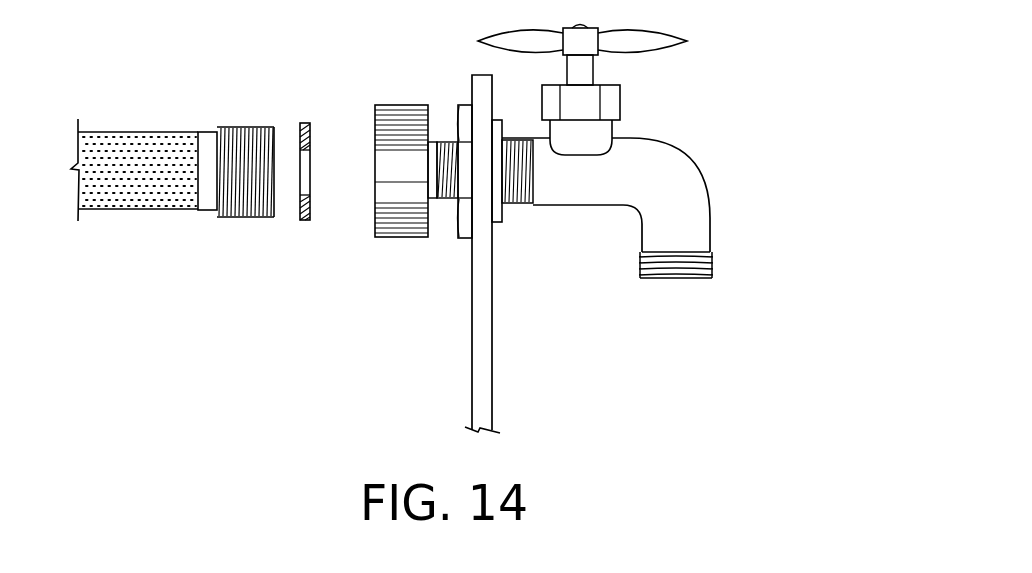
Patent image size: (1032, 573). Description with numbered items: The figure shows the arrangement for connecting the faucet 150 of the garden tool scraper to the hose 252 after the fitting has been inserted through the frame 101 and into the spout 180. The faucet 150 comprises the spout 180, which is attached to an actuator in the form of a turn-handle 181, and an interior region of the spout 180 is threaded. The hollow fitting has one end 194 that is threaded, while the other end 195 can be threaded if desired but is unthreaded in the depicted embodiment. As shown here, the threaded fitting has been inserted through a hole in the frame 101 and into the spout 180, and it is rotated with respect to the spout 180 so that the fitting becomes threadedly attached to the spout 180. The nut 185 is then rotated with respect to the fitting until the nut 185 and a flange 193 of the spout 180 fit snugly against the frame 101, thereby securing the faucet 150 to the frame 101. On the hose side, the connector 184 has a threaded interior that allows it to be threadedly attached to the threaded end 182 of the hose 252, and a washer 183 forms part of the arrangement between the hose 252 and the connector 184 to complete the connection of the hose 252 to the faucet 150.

The frame 101 is at (505, 388).
The faucet 150 is at (670, 162).
The spout 180 is at (629, 177).
The turn-handle 181 is at (683, 41).
The threaded end 182 is at (245, 217).
The washer 183 is at (306, 222).
The connector 184 is at (405, 237).
The nut 185 is at (468, 238).
The flange 193 is at (528, 208).
The threaded end of fitting 194 is at (447, 142).
The other end of fitting 195 is at (432, 155).
The hose 252 is at (157, 209).